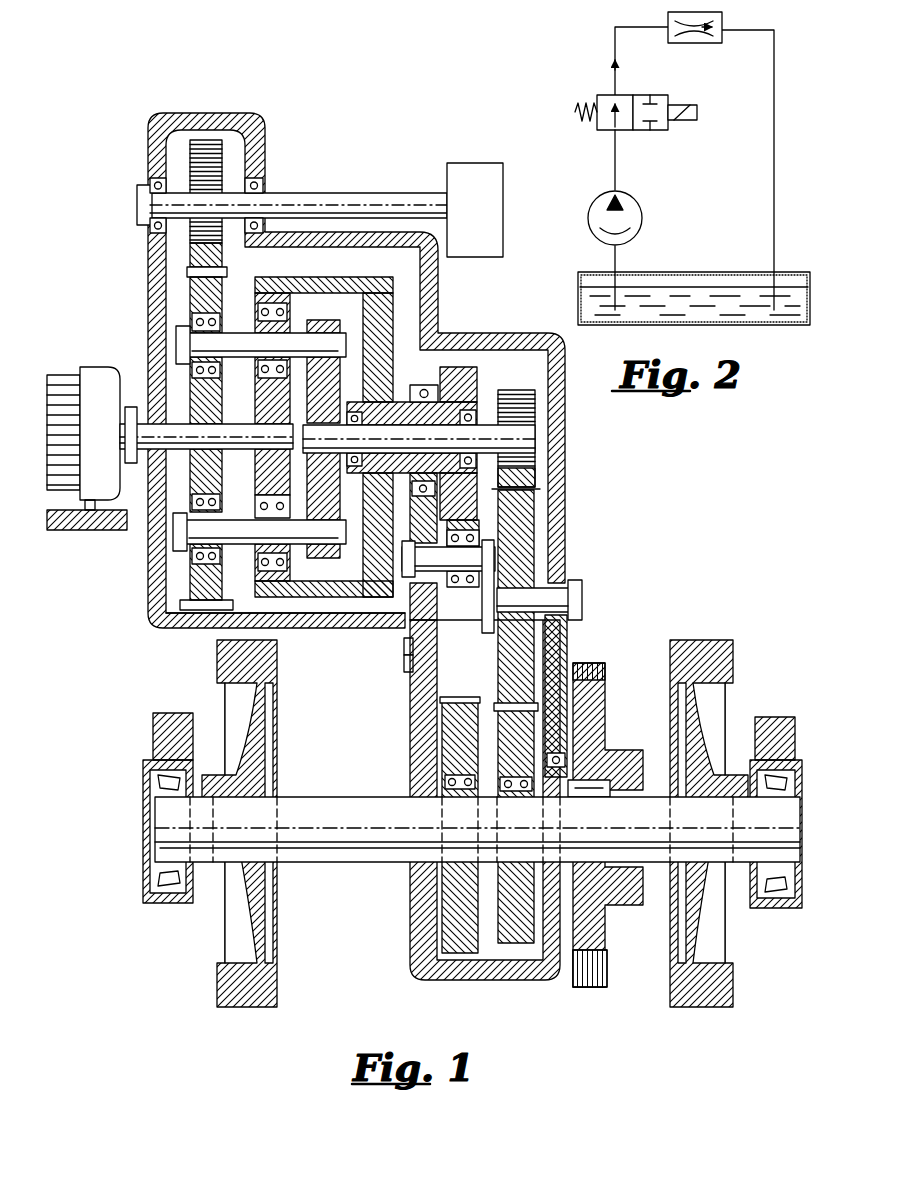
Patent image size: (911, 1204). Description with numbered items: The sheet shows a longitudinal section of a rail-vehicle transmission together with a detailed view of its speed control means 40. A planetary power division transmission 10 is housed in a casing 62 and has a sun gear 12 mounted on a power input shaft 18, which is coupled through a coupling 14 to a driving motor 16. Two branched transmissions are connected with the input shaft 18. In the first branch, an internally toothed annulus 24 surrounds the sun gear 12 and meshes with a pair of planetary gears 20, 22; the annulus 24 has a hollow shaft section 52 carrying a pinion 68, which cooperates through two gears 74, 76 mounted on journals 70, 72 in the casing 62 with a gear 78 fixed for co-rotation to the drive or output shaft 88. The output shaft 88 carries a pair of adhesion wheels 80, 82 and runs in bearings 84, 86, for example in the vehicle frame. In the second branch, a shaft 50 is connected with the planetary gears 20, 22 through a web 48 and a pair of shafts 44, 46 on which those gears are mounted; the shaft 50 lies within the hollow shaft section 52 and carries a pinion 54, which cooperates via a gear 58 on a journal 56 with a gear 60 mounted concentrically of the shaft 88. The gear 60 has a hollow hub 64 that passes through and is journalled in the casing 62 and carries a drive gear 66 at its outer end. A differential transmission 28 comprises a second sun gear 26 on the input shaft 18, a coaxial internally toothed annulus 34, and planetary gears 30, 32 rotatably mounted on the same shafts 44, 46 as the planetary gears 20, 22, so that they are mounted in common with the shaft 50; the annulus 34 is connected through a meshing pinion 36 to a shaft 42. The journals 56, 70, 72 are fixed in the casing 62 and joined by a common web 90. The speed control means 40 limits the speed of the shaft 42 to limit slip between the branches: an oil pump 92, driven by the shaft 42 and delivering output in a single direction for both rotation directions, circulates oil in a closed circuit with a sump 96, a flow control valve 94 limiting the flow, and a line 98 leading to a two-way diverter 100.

In FIG. 1, the power division transmission 10 is at (315, 624).
In FIG. 1, the sun gear 12 is at (262, 403).
In FIG. 1, the coupling 14 is at (130, 405).
In FIG. 1, the driving motor 16 is at (63, 372).
In FIG. 1, the power input shaft 18 is at (238, 450).
In FIG. 1, the planetary gear 20 is at (258, 504).
In FIG. 1, the planetary gear 22 is at (260, 313).
In FIG. 1, the internally toothed annulus 24 is at (282, 282).
In FIG. 1, the second sun gear 26 is at (212, 398).
In FIG. 1, the differential transmission 28 is at (213, 632).
In FIG. 1, the planetary gear 30 is at (192, 574).
In FIG. 1, the planetary gear 32 is at (183, 306).
In FIG. 1, the internally toothed annulus 34 is at (196, 626).
In FIG. 1, the meshing pinion 36 is at (207, 165).
In FIG. 1, the speed control means 40 is at (466, 160).
In FIG. 2, the speed control means 40 is at (590, 68).
In FIG. 1, the shaft 42 is at (328, 199).
In FIG. 1, the shaft 44 is at (313, 624).
In FIG. 1, the shaft 46 is at (298, 340).
In FIG. 1, the web 48 is at (332, 328).
In FIG. 1, the shaft 50 is at (419, 439).
In FIG. 1, the hollow shaft section 52 is at (405, 394).
In FIG. 1, the pinion 54 is at (525, 432).
In FIG. 1, the journal 56 is at (583, 601).
In FIG. 1, the gear 58 is at (545, 665).
In FIG. 1, the gear 60 is at (512, 944).
In FIG. 1, the casing 62 is at (456, 996).
In FIG. 1, the hollow shaft portion or hub 64 is at (582, 784).
In FIG. 1, the drive gear 66 is at (600, 951).
In FIG. 1, the pinion 68 is at (470, 392).
In FIG. 1, the journal 70 is at (448, 553).
In FIG. 1, the journal 72 is at (406, 664).
In FIG. 1, the gear 74 is at (404, 645).
In FIG. 1, the gear 76 is at (428, 690).
In FIG. 1, the gear 78 is at (440, 727).
In FIG. 1, the adhesion wheel 80 is at (233, 993).
In FIG. 1, the adhesion wheel 82 is at (700, 993).
In FIG. 1, the bearing 84 is at (170, 903).
In FIG. 1, the bearing 86 is at (778, 909).
In FIG. 1, the drive or output shaft 88 is at (337, 845).
In FIG. 1, the common web 90 is at (492, 632).
In FIG. 2, the oil pump 92 is at (593, 234).
In FIG. 2, the flow control valve 94 is at (697, 44).
In FIG. 2, the sump 96 is at (738, 327).
In FIG. 2, the line 98 is at (615, 162).
In FIG. 2, the two-way diverter 100 is at (656, 130).